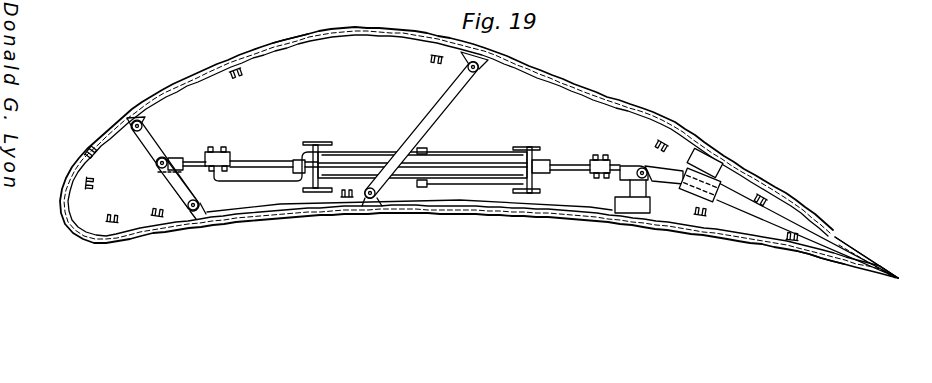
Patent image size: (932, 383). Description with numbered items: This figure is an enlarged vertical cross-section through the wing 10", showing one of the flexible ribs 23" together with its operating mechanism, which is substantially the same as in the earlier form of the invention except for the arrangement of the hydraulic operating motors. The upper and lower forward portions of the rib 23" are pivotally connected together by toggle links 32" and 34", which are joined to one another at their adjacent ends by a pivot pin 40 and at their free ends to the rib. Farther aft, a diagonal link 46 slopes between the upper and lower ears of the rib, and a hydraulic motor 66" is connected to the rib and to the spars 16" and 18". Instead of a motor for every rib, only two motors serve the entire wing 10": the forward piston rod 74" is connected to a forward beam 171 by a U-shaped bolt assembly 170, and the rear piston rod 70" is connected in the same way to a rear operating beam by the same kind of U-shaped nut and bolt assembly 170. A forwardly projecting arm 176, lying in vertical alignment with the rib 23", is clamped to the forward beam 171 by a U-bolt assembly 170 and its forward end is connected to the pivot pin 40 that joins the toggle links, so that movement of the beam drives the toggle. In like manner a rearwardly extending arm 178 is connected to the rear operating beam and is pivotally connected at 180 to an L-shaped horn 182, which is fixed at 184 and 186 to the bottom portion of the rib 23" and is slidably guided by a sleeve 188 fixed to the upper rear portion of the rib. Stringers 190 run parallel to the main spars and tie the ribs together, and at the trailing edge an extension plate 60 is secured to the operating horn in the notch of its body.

The wing 10 is at (595, 83).
The rib 23 is at (291, 47).
The stringer 190 is at (241, 72).
The toggle link 32 is at (150, 143).
The toggle link 34 is at (196, 194).
The pivot pin 40 is at (157, 166).
The forwardly projecting arm 176 is at (196, 158).
The U-shaped bolt assembly 170 is at (212, 150).
The forward beam 171 is at (238, 179).
The forward piston rod 74 is at (248, 162).
The spar 16 is at (314, 141).
The hydraulic motor 66 is at (438, 166).
The spar 18 is at (528, 146).
The diagonal link 46 is at (440, 113).
The rear piston rod 70 is at (576, 149).
The rearwardly extending arm 178 is at (612, 179).
The pivotal connection 180 is at (641, 167).
The L-shaped horn 182 is at (665, 163).
The sleeve 188 is at (720, 176).
The fixing point 184 is at (642, 213).
The fixing point 186 is at (829, 255).
The extension plate 60 is at (861, 260).